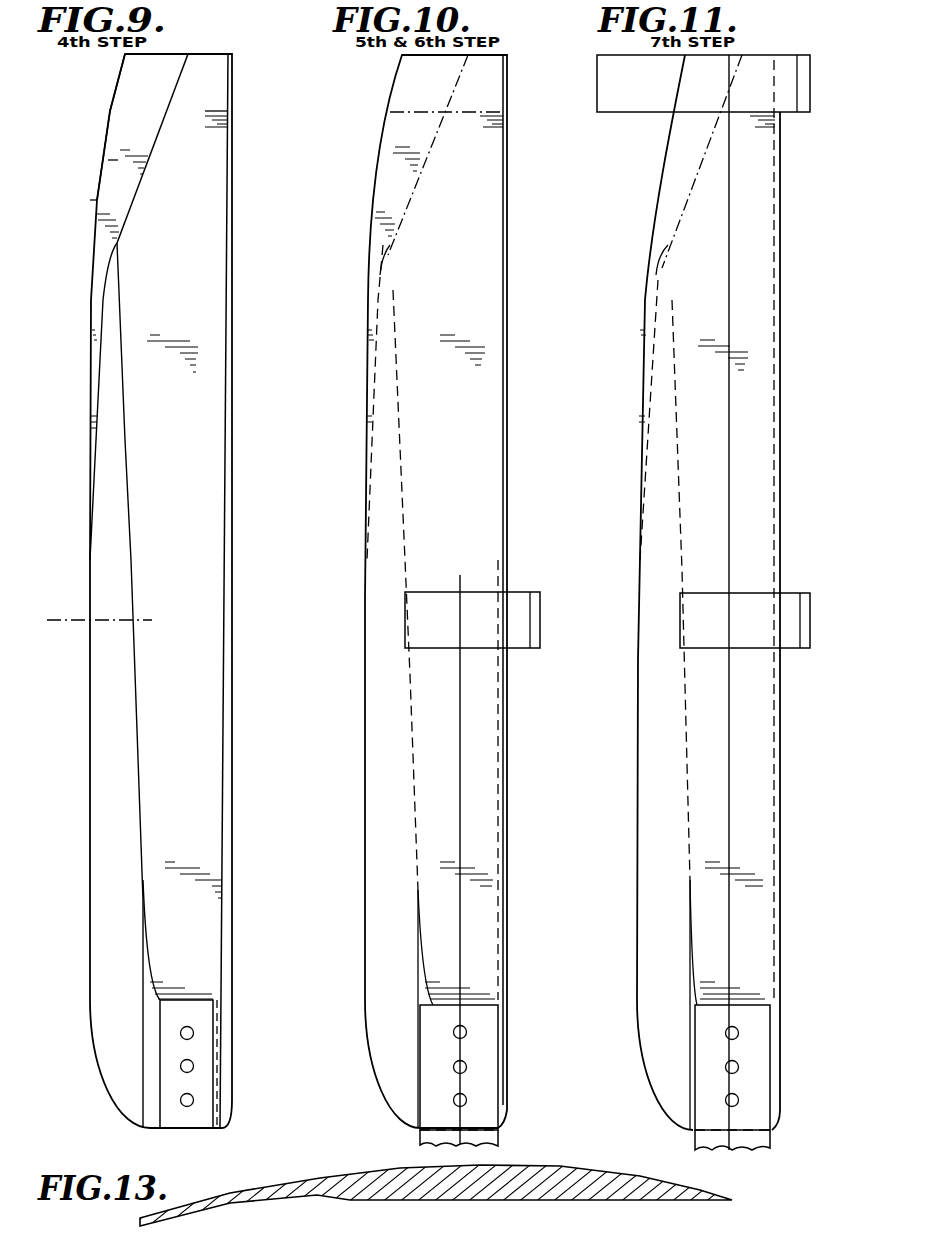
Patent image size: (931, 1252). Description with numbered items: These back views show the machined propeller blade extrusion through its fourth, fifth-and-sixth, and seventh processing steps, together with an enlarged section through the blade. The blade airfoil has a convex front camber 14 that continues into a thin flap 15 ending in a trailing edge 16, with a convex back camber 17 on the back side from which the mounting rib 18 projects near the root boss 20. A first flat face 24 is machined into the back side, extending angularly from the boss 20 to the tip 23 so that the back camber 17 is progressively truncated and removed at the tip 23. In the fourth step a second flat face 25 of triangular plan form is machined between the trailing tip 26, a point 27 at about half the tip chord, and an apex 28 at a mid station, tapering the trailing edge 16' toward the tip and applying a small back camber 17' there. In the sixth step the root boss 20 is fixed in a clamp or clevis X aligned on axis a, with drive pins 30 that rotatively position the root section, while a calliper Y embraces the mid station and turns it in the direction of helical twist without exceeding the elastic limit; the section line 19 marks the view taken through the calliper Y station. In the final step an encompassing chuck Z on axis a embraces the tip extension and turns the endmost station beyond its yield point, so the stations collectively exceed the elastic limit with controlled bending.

In FIG. 9, the front camber 14 is at (161, 591).
In FIG. 10, the front camber 14 is at (436, 591).
In FIG. 11, the front camber 14 is at (708, 592).
In FIG. 13, the front camber 14 is at (612, 1174).
In FIG. 9, the flap 15 is at (108, 258).
In FIG. 13, the flap 15 is at (235, 1200).
In FIG. 9, the trailing edge 16 is at (165, 111).
In FIG. 9, the back camber 17 is at (157, 303).
In FIG. 9, the tapered trailing edge 16' is at (66, 206).
In FIG. 9, the back camber toward tip 17' is at (86, 177).
In FIG. 11, the mounting rib 18 is at (578, 102).
In FIG. 10, the section line 19- 19 is at (305, 642).
In FIG. 10, the root boss 20 is at (480, 992).
In FIG. 9, the tip 23 is at (215, 110).
In FIG. 9, the first flat face 24 is at (182, 444).
In FIG. 10, the first flat face 24 is at (455, 444).
In FIG. 11, the first flat face 24 is at (717, 444).
In FIG. 13, the first flat face 24 is at (470, 1202).
In FIG. 9, the second flat face 25 is at (147, 134).
In FIG. 9, the trailing tip 26 is at (110, 110).
In FIG. 9, the point at tip chord 27 is at (167, 110).
In FIG. 9, the apex 28 is at (83, 618).
In FIG. 9, the drive pins 30 is at (188, 1064).
In FIG. 10, the drive pins 30 is at (458, 1068).
In FIG. 11, the drive pins 30 is at (730, 1068).
In FIG. 10, the axis a is at (460, 940).
In FIG. 11, the axis a is at (730, 407).
In FIG. 13, the axis a is at (540, 1190).
In FIG. 10, the clamp or clevis X is at (487, 1042).
In FIG. 11, the clamp or clevis X is at (750, 1036).
In FIG. 10, the calliper Y is at (523, 597).
In FIG. 11, the calliper Y is at (790, 597).
In FIG. 11, the chuck Z is at (628, 115).